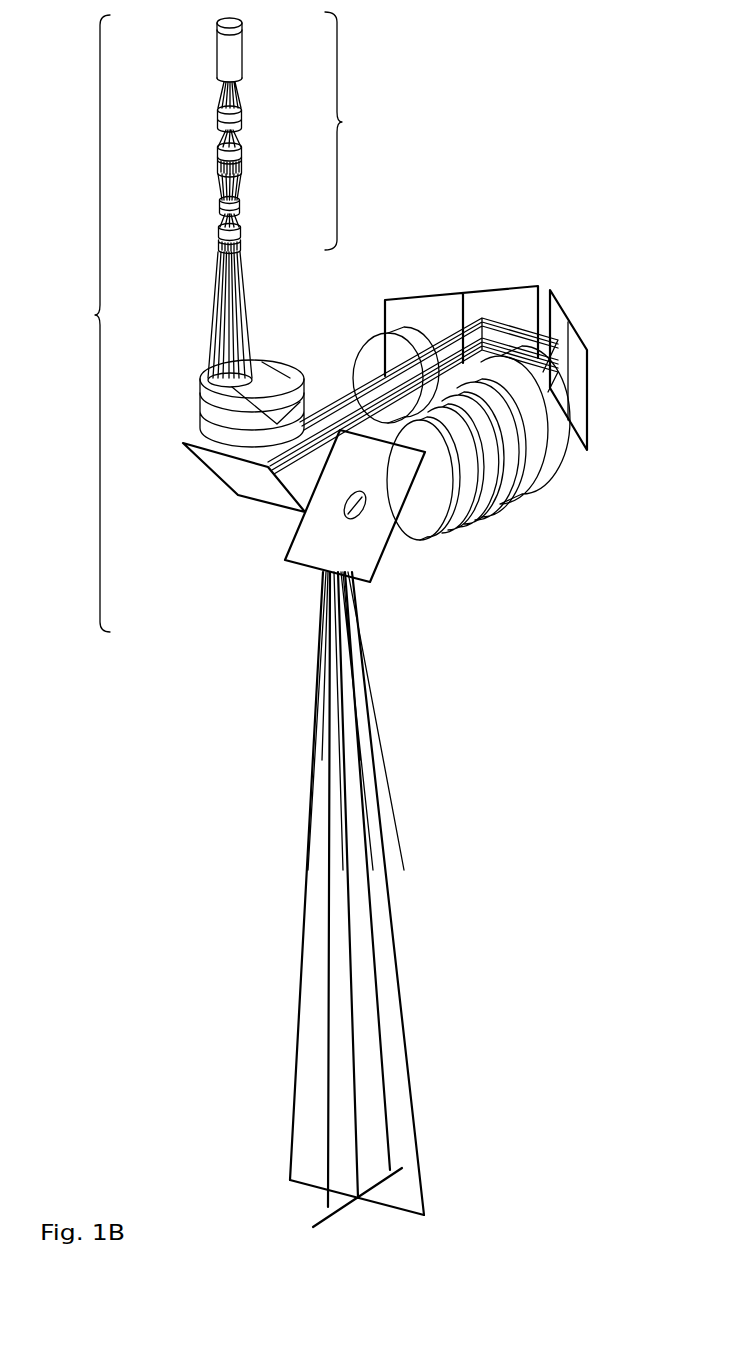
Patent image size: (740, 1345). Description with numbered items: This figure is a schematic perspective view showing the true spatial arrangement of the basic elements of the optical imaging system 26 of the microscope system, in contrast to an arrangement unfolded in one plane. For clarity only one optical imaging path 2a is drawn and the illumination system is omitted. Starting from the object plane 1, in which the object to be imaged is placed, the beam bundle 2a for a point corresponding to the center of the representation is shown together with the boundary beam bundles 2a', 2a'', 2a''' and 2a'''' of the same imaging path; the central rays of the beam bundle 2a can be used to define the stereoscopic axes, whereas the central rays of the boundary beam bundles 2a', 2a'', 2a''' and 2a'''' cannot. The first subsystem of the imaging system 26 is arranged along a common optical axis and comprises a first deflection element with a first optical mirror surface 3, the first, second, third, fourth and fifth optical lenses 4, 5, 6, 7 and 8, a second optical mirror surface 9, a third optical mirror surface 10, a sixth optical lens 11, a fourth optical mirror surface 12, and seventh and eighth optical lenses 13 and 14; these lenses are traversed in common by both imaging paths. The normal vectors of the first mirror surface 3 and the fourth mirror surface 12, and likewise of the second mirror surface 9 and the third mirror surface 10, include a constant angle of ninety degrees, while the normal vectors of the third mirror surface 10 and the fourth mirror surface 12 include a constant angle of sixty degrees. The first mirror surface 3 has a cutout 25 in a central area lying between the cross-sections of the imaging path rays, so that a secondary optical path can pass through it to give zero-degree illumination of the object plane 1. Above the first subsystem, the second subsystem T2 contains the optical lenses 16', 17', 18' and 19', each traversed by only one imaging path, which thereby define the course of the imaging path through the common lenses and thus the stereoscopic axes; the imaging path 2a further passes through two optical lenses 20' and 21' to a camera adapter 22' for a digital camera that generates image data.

The object plane 1 is at (407, 1207).
The optical imaging path 2a is at (304, 725).
The boundary beam bundle 2a' is at (411, 893).
The boundary beam bundle 2a'' is at (395, 871).
The boundary beam bundle 2a''' is at (284, 876).
The boundary beam bundle 2a'''' is at (291, 889).
The first optical mirror surface 3 is at (346, 529).
The first optical lens 4 is at (432, 527).
The second optical lens 5 is at (470, 507).
The third optical lens 6 is at (485, 495).
The fourth optical lens 7 is at (505, 480).
The fifth optical lens 8 is at (545, 455).
The second optical mirror surface 9 is at (590, 410).
The third optical mirror surface 10 is at (500, 290).
The sixth optical lens 11 is at (378, 332).
The fourth optical mirror surface 12 is at (258, 505).
The seventh optical lens 13 is at (208, 432).
The eighth optical lens 14 is at (208, 403).
The optical lens 16' is at (201, 241).
The optical lens 17' is at (264, 227).
The optical lens 18' is at (201, 203).
The optical lens 19' is at (263, 163).
The optical lens 20' is at (201, 147).
The optical lens 21' is at (263, 117).
The camera adapter 22' is at (200, 50).
The cutout 25 is at (355, 522).
The optical imaging system 26 is at (89, 323).
The second subsystem T2 is at (345, 131).